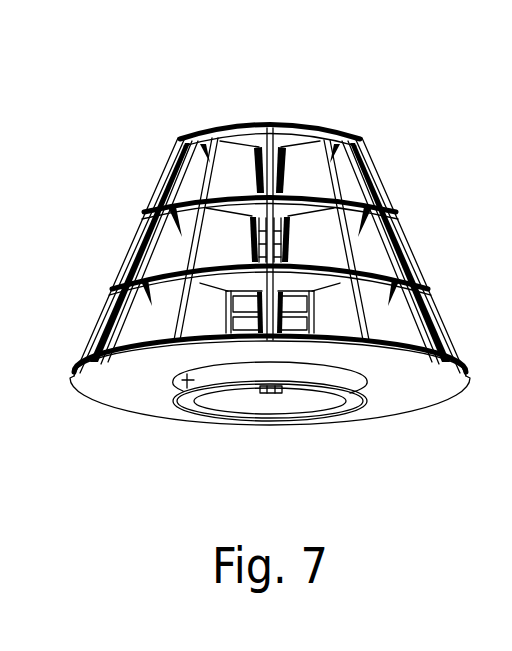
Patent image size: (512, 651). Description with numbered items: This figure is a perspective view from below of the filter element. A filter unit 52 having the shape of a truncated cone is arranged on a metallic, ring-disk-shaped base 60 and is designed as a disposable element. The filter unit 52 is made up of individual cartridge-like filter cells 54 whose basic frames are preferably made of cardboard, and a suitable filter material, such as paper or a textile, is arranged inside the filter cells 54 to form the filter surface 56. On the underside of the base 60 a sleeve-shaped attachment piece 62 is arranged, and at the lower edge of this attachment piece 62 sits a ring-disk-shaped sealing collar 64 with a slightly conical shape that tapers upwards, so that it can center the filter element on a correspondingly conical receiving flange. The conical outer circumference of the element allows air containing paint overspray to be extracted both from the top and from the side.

The filter unit 52 is at (291, 122).
The filter cells 54 is at (167, 228).
The filter surface 56 is at (383, 253).
The base 60 is at (425, 408).
The attachment piece 62 is at (193, 381).
The sealing collar 64 is at (204, 420).